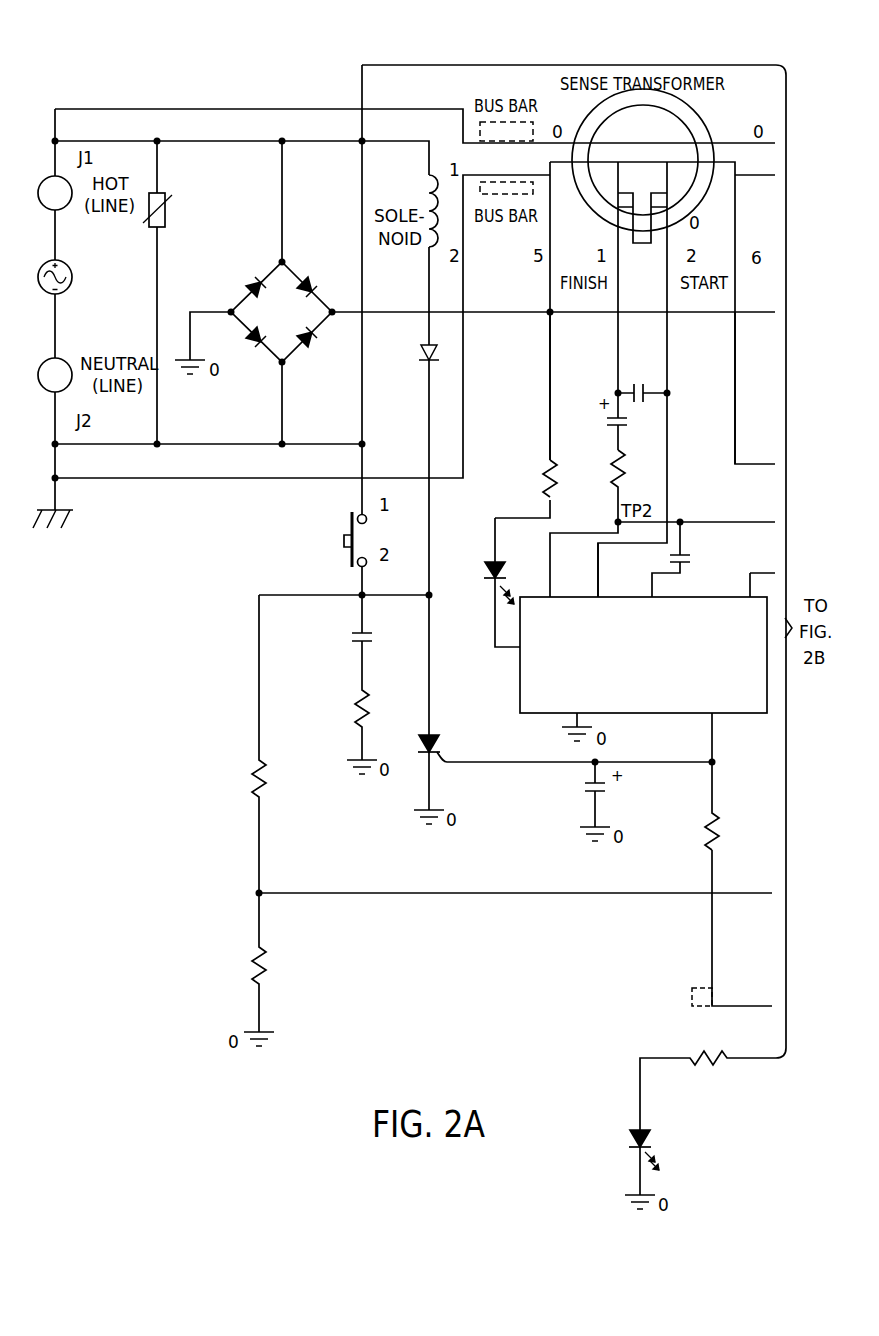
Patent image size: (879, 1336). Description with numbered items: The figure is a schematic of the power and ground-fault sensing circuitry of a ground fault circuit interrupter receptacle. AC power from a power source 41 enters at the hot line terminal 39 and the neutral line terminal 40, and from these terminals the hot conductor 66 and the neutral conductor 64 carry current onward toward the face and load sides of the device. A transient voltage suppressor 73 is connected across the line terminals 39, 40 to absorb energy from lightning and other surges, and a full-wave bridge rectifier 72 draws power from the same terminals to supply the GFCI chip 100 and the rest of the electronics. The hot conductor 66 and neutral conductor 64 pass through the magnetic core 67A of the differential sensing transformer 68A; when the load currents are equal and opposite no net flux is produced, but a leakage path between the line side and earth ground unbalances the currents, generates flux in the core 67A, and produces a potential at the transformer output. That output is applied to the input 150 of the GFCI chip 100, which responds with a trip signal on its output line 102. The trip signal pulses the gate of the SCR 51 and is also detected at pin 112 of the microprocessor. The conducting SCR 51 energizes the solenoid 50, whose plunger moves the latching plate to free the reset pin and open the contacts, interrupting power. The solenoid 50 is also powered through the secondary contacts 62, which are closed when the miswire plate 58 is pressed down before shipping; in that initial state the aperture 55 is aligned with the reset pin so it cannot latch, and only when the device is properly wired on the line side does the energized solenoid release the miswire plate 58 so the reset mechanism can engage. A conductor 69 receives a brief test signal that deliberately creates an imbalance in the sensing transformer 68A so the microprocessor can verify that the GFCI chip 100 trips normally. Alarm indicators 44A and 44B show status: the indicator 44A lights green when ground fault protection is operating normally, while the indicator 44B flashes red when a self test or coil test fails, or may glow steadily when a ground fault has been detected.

The line terminal 39 is at (48, 210).
The line terminal 40 is at (64, 362).
The power source 41 is at (48, 294).
The hot conductor 66 is at (188, 104).
The neutral conductor 64 is at (200, 480).
The transient voltage suppressor 73 is at (162, 192).
The full-wave bridge rectifier 72 is at (318, 282).
The solenoid 50 is at (426, 193).
The miswire plate 58 is at (350, 516).
The secondary contacts 62 is at (367, 522).
The SCR 51 is at (428, 736).
The alarm indicator 44A is at (503, 562).
The alarm indicator 44B is at (637, 1130).
The input of the GFCI chip 150 is at (622, 592).
The GFCI chip 100 is at (530, 662).
The output line 102 is at (716, 750).
The aperture 55 is at (712, 815).
The pin of the microprocessor 112 is at (704, 997).
The conductor 69 is at (735, 402).
The magnetic core 67A is at (683, 117).
The sensing transformer 68A is at (642, 200).